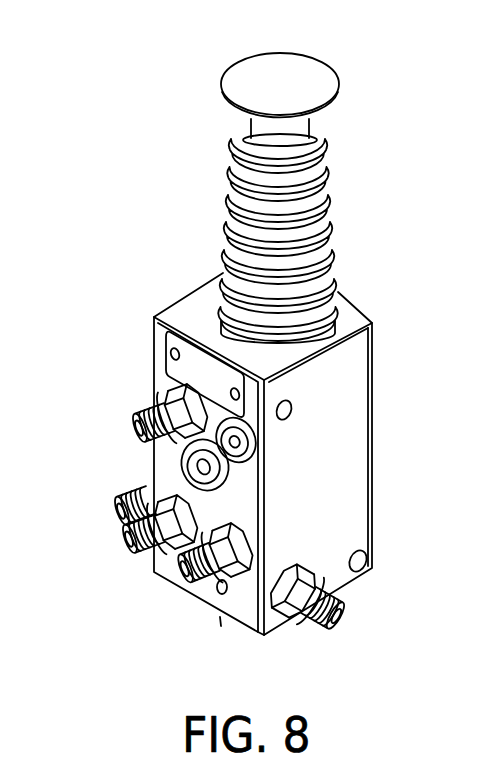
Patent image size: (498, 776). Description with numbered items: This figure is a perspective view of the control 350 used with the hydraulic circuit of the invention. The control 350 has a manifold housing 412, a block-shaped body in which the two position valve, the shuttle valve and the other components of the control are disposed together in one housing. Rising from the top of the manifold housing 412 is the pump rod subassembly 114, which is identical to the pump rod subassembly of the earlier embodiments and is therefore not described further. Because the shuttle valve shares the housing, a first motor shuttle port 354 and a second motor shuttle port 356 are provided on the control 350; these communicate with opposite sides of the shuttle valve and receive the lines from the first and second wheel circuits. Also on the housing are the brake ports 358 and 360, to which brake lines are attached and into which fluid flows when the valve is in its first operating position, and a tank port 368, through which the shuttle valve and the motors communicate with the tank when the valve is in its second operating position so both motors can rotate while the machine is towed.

The control 350 is at (140, 310).
The pump rod subassembly 114 is at (356, 210).
The manifold housing 412 is at (389, 382).
The tank port 368 is at (133, 430).
The first motor shuttle port 354 is at (118, 503).
The brake port 360 is at (135, 557).
The brake port 358 is at (185, 582).
The second motor shuttle port 356 is at (340, 614).